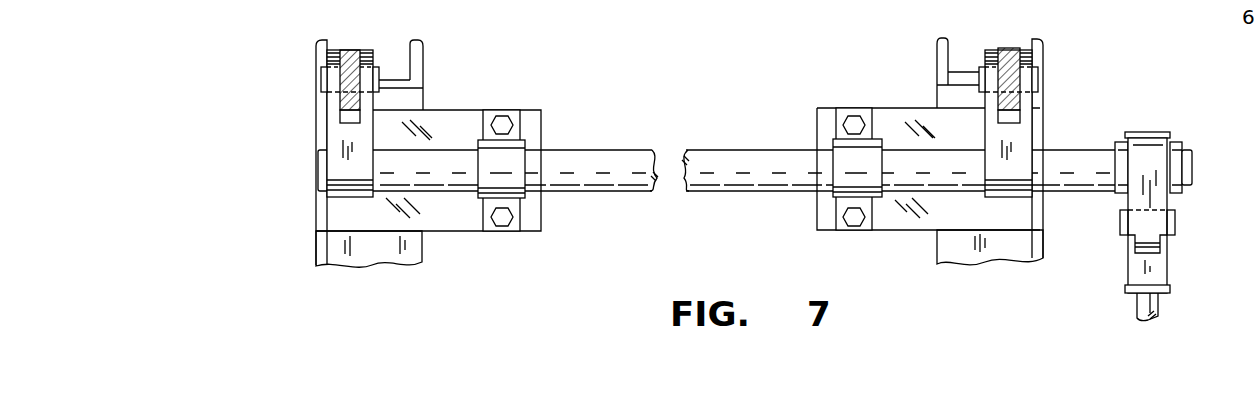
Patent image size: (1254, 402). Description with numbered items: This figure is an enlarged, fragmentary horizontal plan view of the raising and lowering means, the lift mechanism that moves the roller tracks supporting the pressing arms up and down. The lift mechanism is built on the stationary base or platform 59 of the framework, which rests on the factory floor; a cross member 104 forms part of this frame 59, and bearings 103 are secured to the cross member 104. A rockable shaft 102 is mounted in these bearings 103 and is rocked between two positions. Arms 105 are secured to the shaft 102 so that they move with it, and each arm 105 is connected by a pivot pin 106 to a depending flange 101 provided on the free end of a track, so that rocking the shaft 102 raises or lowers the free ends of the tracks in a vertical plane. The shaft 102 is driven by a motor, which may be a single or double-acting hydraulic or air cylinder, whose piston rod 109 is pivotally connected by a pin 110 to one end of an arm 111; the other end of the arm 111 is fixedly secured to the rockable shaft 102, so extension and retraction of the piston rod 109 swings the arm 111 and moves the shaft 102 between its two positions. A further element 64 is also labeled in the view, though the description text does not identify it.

The stationary base or platform 59 is at (434, 88).
The frame member 64 is at (147, 0).
The depending flange 101 is at (353, 50).
The rockable shaft 102 is at (703, 158).
The bearings 103 is at (513, 113).
The cross member 104 is at (535, 135).
The arms 105 is at (335, 135).
The pivot pins 106 is at (318, 78).
The piston rod 109 is at (1160, 302).
The pin 110 is at (1175, 220).
The arm 111 is at (1152, 138).